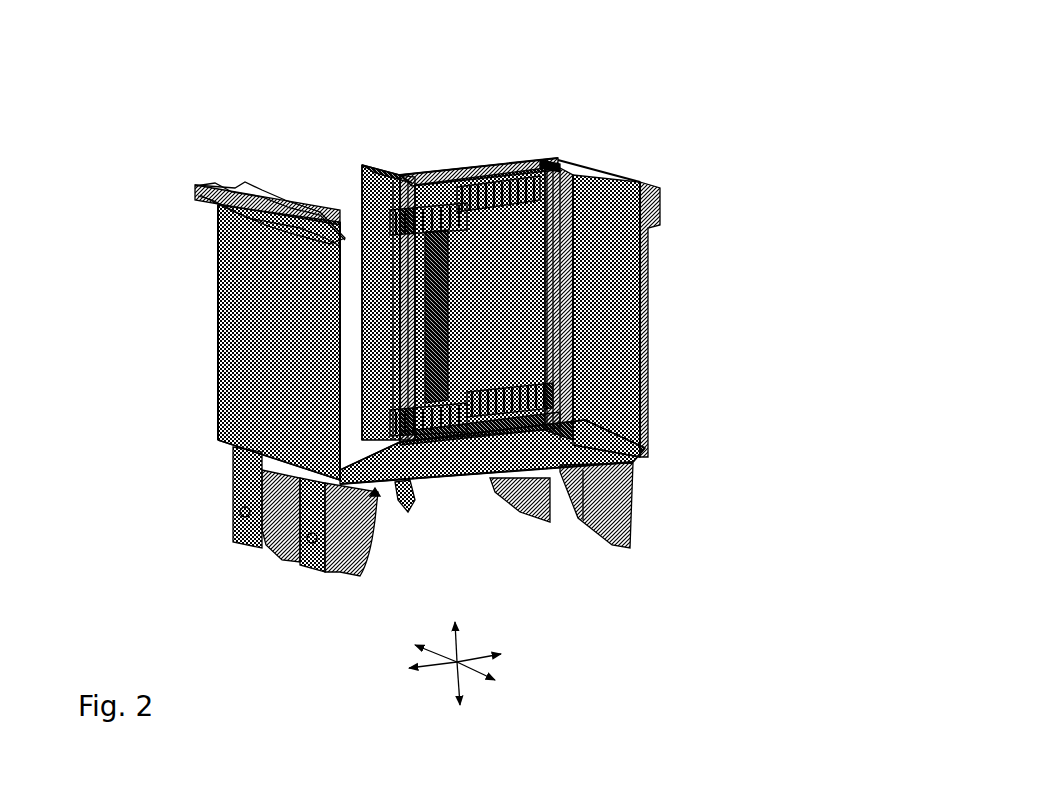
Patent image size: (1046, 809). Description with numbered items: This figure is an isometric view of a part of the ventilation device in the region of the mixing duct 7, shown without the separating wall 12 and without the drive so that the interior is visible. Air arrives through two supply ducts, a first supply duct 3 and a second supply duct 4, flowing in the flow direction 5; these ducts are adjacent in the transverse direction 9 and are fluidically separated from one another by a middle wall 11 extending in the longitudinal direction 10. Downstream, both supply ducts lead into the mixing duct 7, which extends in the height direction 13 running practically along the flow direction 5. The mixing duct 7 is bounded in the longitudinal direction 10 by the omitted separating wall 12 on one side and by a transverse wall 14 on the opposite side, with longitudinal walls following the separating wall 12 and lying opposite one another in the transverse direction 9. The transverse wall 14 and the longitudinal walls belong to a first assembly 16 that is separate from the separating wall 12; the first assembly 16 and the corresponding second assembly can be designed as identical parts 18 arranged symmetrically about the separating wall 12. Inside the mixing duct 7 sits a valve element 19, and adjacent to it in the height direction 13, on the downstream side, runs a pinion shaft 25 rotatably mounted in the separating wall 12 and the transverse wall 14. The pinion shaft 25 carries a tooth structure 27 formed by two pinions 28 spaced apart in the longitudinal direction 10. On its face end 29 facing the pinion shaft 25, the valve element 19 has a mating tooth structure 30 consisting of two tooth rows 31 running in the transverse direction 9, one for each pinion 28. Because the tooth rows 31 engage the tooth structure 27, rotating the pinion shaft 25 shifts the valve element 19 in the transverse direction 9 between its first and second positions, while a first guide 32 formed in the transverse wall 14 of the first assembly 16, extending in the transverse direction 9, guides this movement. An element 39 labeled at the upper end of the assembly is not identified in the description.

The first supply duct 3 is at (245, 197).
The second supply duct 4 is at (510, 167).
The flow direction 5 is at (268, 112).
The mixing duct 7 is at (363, 547).
The transverse direction 9 is at (497, 660).
The longitudinal direction 10 is at (457, 682).
The middle wall 11 is at (370, 158).
The separating wall 12 is at (180, 88).
The height direction 13 is at (485, 673).
The transverse wall 14 is at (470, 477).
The first assembly 16 is at (125, 381).
The identical parts 18 is at (140, 382).
The valve element 19 is at (492, 152).
The pinion shaft 25 is at (450, 310).
The tooth structure 27 is at (567, 160).
The pinion 28 is at (470, 245).
The face end 29 is at (583, 247).
The mating tooth structure 30 is at (632, 487).
The tooth row 31 is at (560, 170).
The first guide 32 is at (573, 303).
The corner connector 39 is at (540, 165).